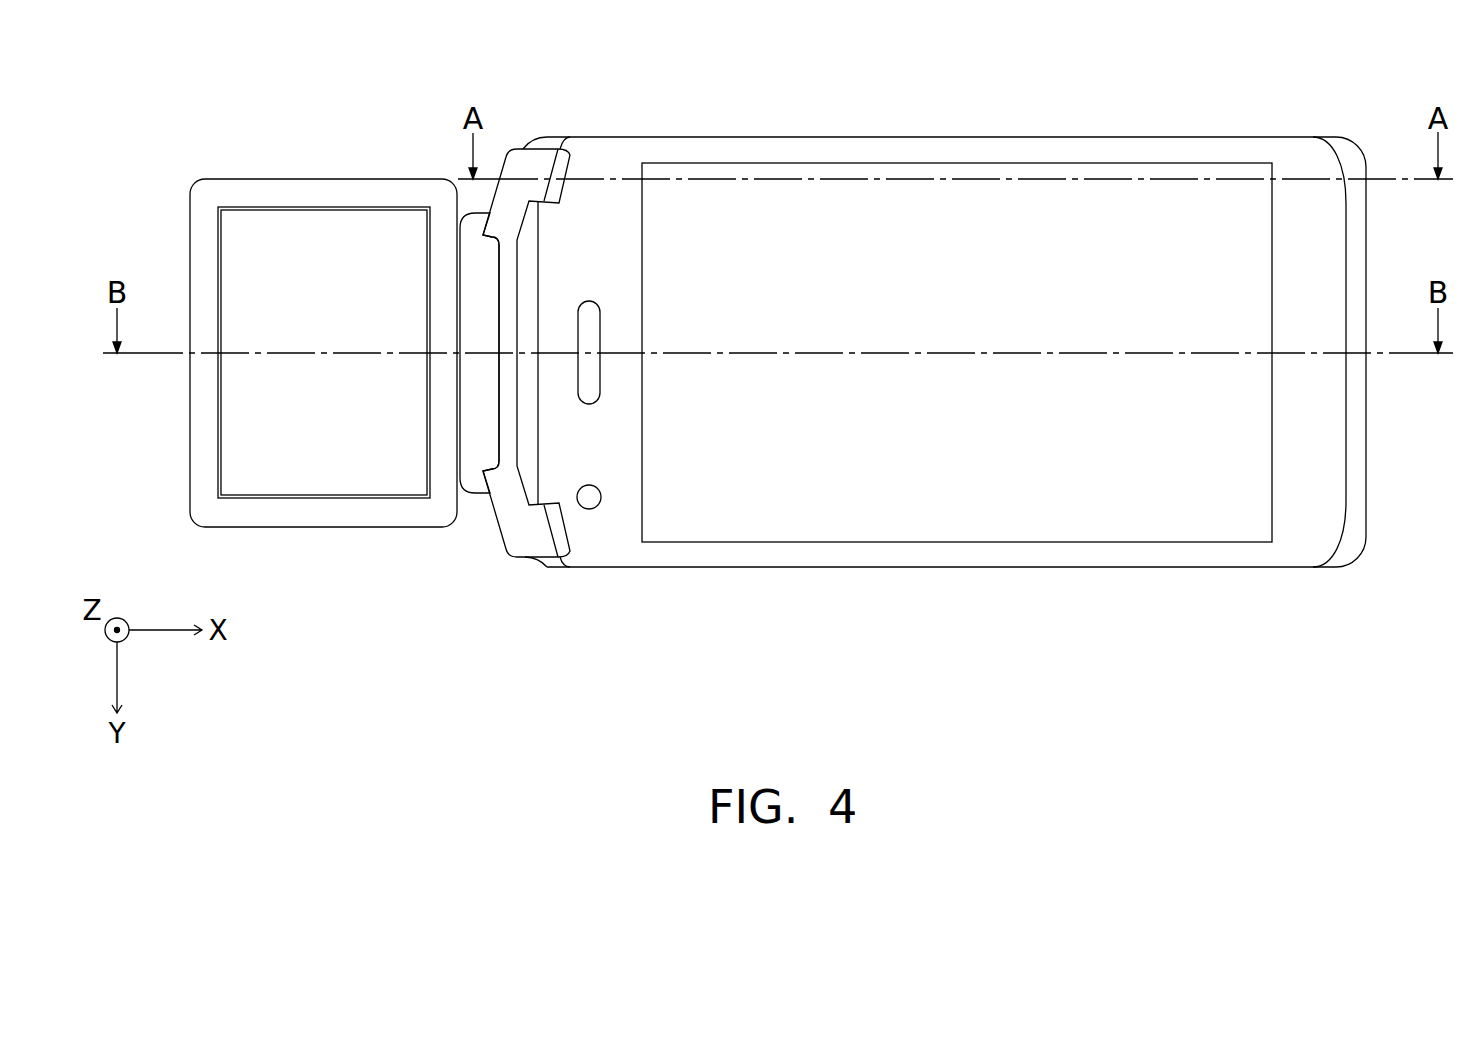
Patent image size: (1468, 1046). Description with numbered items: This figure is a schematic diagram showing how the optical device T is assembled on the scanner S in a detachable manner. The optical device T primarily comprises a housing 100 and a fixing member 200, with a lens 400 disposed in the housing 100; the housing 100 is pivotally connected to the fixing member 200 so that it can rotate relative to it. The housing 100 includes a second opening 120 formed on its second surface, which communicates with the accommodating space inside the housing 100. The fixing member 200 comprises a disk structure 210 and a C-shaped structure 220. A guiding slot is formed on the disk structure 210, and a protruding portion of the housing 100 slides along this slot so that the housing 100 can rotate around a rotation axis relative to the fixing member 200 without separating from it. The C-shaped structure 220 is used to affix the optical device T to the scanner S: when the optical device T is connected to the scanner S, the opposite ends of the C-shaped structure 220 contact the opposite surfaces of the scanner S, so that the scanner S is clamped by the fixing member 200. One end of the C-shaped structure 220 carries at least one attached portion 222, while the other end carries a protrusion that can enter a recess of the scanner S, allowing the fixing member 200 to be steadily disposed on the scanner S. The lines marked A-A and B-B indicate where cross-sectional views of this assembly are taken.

The housing 100 is at (272, 178).
The second opening 120 is at (377, 207).
The lens 400 is at (324, 445).
The fixing member 200 is at (560, 421).
The disk structure 210 is at (472, 460).
The C-shaped structure 220 is at (520, 535).
The attached portion 222 is at (557, 528).
The optical device T is at (192, 179).
The scanner S is at (1355, 558).